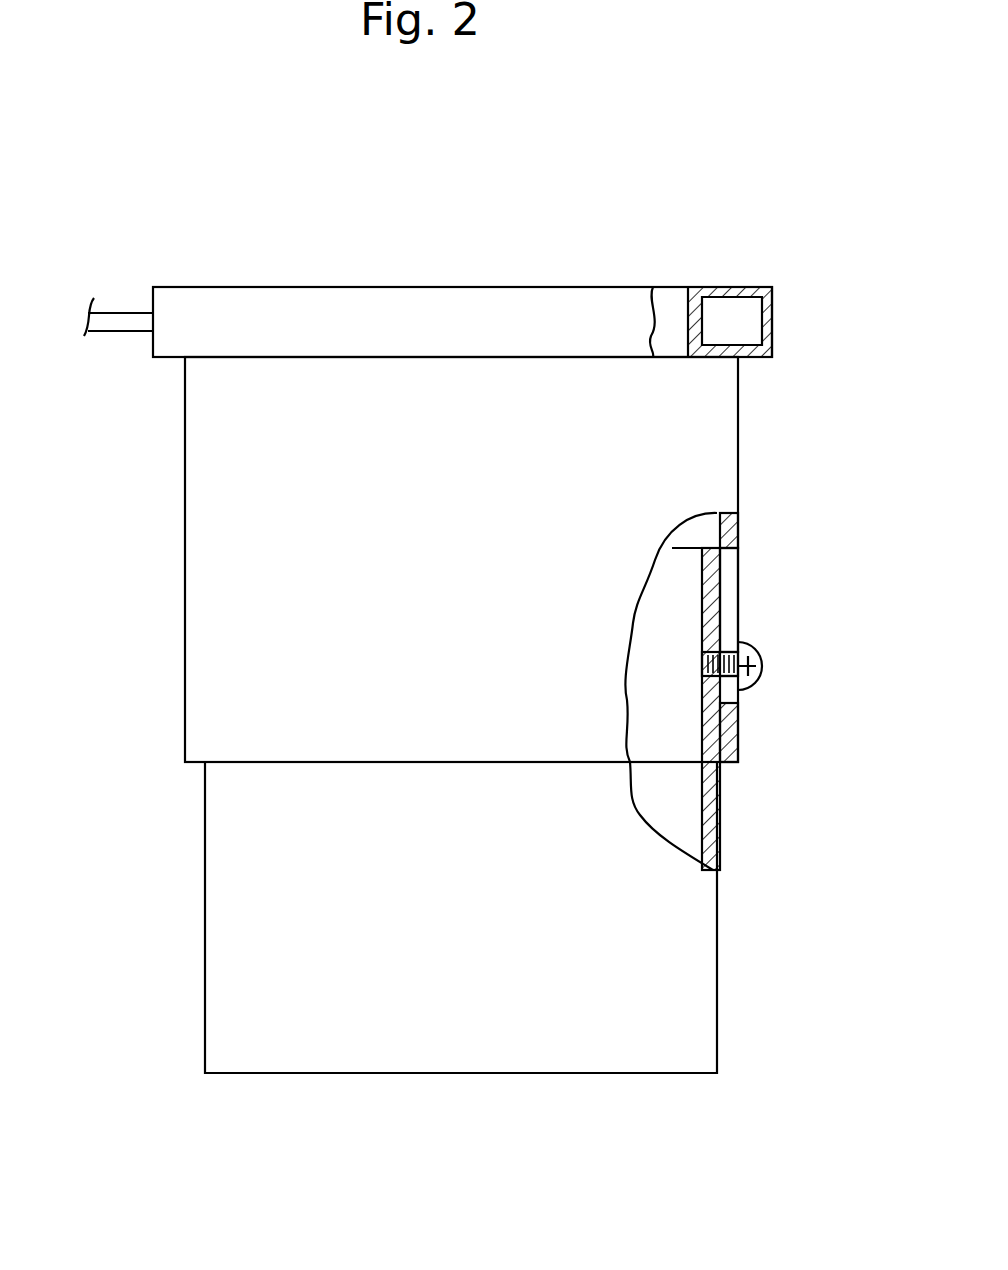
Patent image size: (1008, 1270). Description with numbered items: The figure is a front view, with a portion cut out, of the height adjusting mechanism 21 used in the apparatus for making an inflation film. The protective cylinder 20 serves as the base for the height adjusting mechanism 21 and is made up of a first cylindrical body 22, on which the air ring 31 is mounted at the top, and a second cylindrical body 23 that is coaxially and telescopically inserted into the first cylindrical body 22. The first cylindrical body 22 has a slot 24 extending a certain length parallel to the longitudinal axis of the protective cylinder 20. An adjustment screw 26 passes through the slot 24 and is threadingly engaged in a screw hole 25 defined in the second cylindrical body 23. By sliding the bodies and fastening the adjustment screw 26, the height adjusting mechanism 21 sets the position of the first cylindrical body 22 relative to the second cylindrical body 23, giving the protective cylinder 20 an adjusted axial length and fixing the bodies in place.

The protective cylinder 20 is at (172, 472).
The height adjusting mechanism 21 is at (768, 503).
The first cylindrical body 22 is at (710, 412).
The second cylindrical body 23 is at (685, 945).
The slot 24 is at (732, 582).
The screw hole 25 is at (702, 672).
The adjustment screw 26 is at (760, 670).
The air ring 31 is at (330, 274).